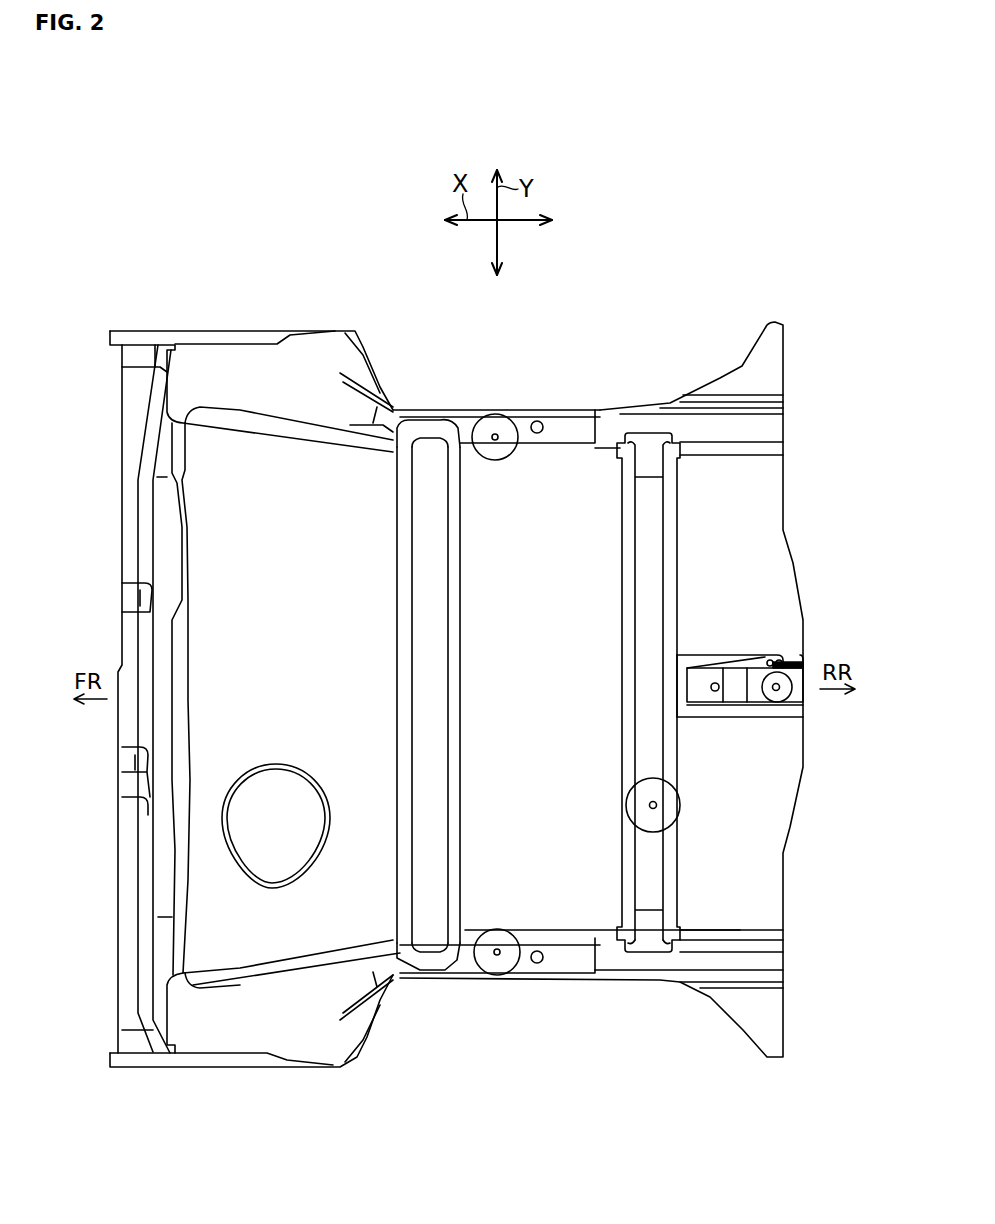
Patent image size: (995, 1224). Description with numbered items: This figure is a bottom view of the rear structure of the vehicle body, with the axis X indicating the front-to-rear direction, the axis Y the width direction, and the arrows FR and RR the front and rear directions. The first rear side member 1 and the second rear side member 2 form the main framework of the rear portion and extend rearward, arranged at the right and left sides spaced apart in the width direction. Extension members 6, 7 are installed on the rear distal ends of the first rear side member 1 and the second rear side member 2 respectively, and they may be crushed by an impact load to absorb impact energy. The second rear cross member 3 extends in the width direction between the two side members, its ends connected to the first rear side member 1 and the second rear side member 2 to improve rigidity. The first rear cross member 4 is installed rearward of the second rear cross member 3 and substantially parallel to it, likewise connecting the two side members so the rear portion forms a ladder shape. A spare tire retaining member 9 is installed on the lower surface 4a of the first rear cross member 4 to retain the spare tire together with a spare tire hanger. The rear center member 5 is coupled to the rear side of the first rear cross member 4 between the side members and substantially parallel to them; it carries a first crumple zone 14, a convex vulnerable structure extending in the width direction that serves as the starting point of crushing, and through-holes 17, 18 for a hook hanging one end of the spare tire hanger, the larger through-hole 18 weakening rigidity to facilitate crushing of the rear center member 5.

The first rear side member 1 is at (564, 980).
The second rear side member 2 is at (576, 408).
The second rear cross member 3 is at (397, 636).
The first rear cross member 4 is at (618, 692).
The lower surface 4a is at (643, 717).
The rear center member 5 is at (722, 655).
The extension member 6 is at (767, 958).
The extension member 7 is at (767, 428).
The spare tire retaining member 9 is at (627, 822).
The first crumple zone 14 is at (737, 692).
The through-hole 17 is at (779, 690).
The through-hole 18 is at (768, 693).